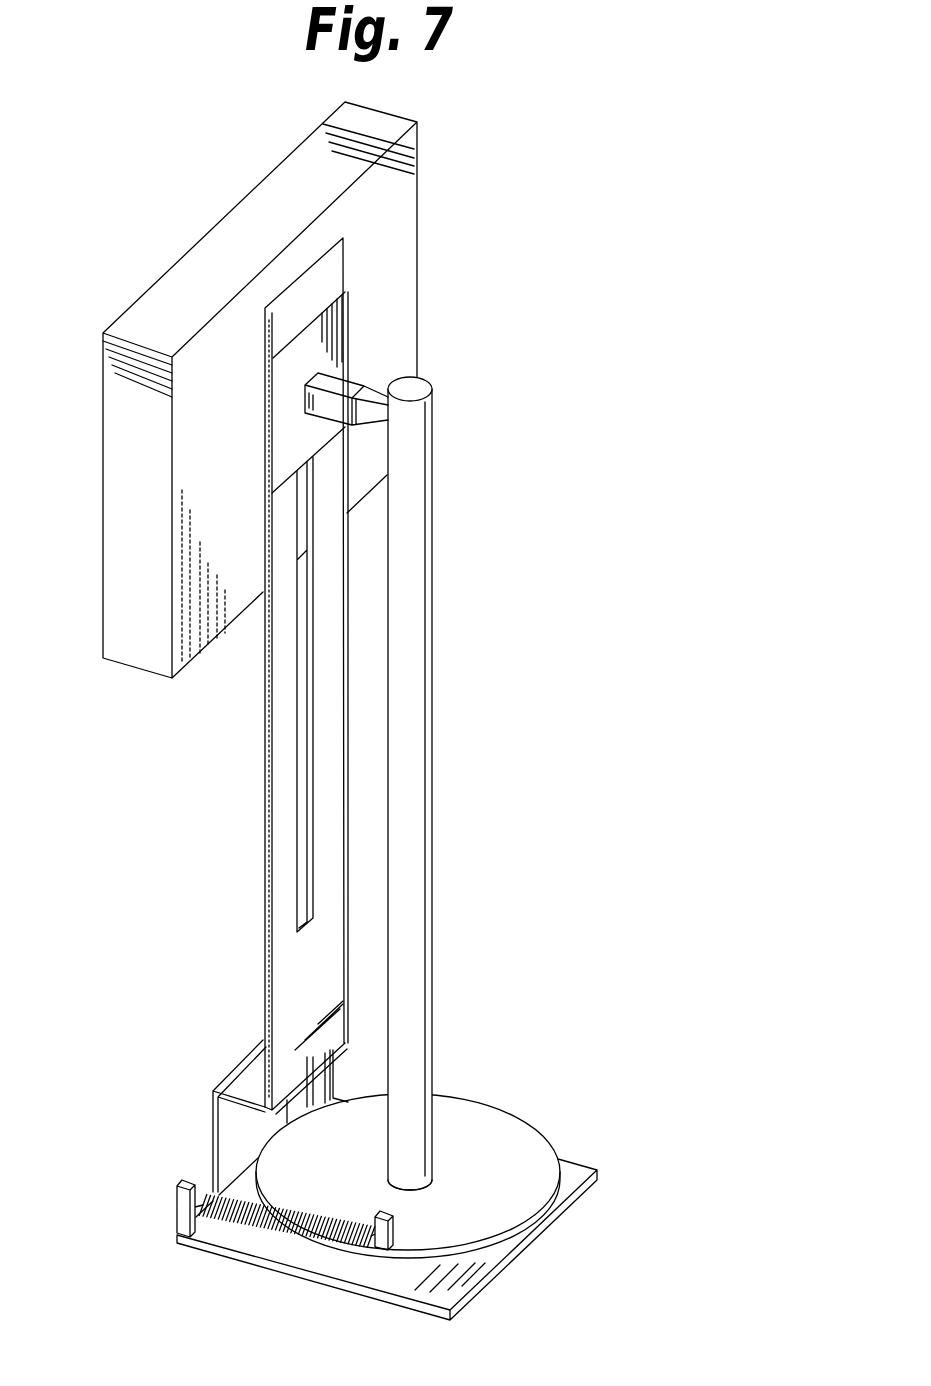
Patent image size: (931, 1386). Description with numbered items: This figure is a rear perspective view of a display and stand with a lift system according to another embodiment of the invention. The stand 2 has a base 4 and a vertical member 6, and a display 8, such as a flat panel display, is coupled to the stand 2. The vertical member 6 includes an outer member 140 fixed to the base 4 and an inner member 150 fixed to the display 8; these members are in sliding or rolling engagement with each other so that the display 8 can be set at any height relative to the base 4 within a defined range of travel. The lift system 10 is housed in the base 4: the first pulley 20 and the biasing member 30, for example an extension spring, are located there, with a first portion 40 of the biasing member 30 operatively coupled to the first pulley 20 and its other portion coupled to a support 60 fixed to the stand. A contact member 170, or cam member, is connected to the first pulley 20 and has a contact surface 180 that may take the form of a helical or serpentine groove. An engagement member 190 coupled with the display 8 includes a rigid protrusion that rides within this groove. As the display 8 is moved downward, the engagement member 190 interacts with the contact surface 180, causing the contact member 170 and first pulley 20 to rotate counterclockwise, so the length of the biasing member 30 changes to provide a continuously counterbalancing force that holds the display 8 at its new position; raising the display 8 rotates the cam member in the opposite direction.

The stand 2 is at (175, 926).
The base 4 is at (575, 1177).
The vertical member 6 is at (265, 807).
The display 8 is at (400, 210).
The lift system 10 is at (463, 1063).
The first pulley 20 is at (515, 1135).
The biasing member 30 is at (245, 1223).
The first portion 40 is at (373, 1238).
The support 60 is at (178, 1208).
The outer member 140 is at (265, 667).
The inner member 150 is at (355, 347).
The contact member 170 is at (415, 662).
The contact surface 180 is at (434, 441).
The engagement member 190 is at (372, 392).